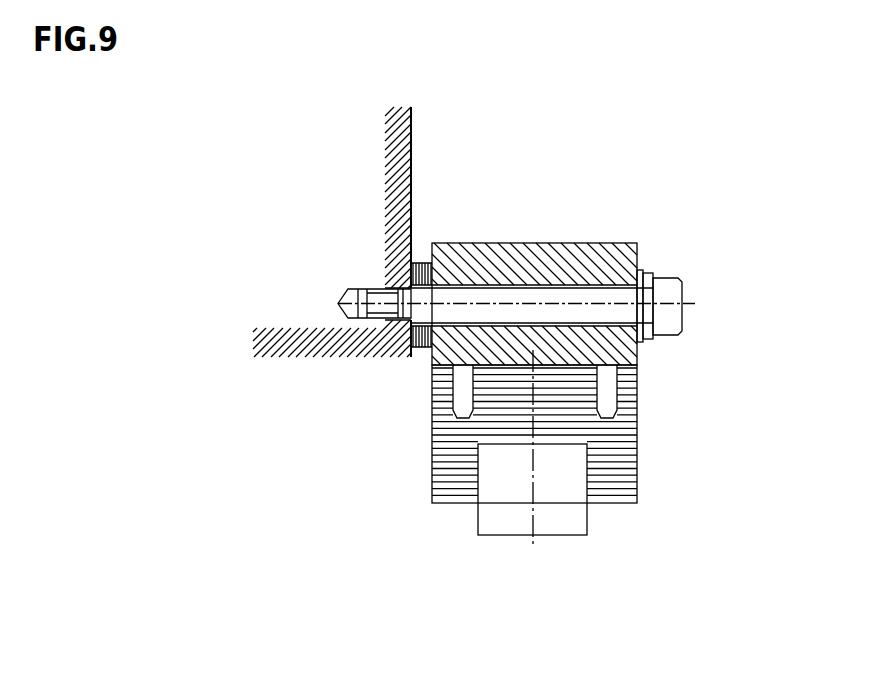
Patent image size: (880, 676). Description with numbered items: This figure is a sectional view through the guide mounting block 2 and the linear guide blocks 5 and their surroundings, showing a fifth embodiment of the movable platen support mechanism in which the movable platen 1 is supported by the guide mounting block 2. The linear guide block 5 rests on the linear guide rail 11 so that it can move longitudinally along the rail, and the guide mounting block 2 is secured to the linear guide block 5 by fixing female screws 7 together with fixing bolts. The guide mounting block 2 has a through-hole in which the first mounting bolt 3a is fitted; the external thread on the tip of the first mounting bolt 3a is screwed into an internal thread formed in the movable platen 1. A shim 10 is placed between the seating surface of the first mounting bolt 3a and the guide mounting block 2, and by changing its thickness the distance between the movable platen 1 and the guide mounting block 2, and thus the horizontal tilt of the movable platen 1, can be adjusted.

The movable platen 1 is at (352, 190).
The guide mounting block 2 is at (565, 262).
The shim 10 is at (645, 267).
The first mounting bolt 3a is at (678, 335).
The linear guide block 5 is at (622, 465).
The fixing female screw 7 is at (443, 388).
The linear guide rail 11 is at (562, 500).